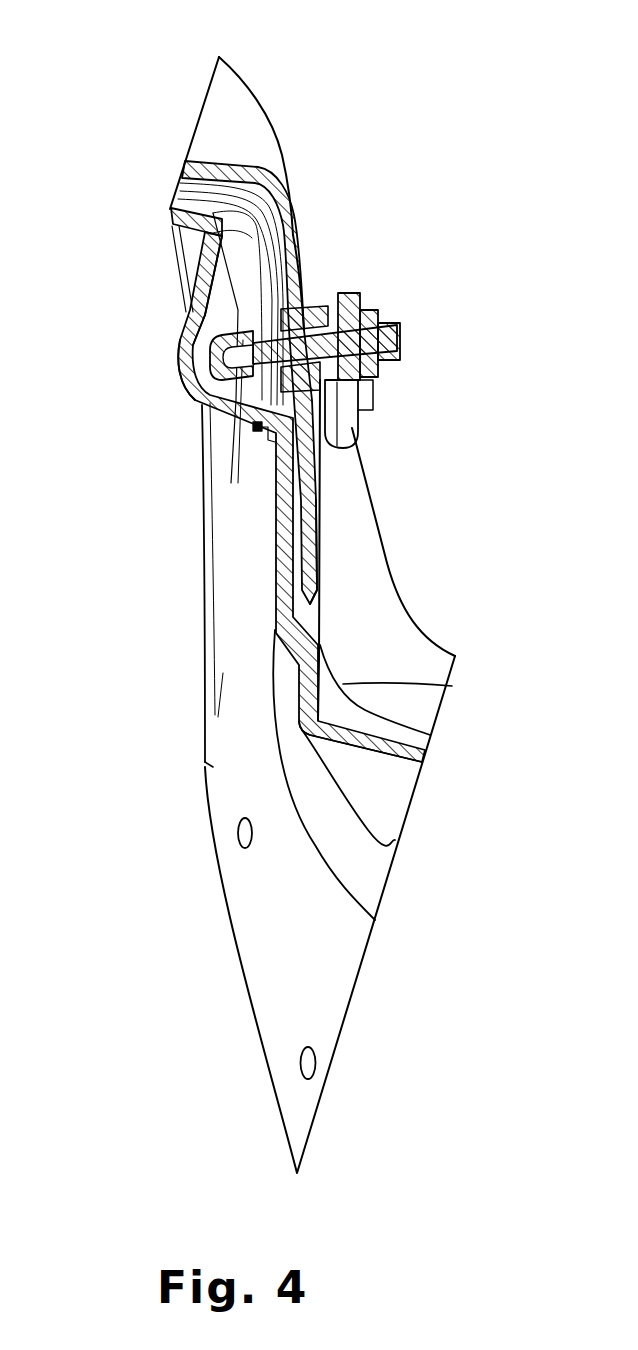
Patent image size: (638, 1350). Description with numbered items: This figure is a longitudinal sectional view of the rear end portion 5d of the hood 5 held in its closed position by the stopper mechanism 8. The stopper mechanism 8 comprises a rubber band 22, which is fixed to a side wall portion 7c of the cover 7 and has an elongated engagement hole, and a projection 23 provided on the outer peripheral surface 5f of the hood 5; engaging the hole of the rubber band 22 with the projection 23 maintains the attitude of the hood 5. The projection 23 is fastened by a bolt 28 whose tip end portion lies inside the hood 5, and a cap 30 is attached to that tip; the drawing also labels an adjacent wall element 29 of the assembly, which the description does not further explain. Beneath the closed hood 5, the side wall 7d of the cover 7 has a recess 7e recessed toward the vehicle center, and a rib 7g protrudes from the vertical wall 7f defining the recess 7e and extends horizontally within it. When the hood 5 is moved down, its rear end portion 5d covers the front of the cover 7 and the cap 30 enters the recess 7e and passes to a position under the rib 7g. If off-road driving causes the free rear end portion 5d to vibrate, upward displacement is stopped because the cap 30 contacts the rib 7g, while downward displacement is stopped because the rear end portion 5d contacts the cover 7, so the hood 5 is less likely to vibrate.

The hood 5 is at (255, 135).
The rear end portion 5d is at (238, 85).
The outer peripheral surface 5f is at (320, 530).
The cover 7 is at (420, 655).
The side wall portion 7c is at (318, 676).
The side wall 7d is at (270, 493).
The recess 7e is at (247, 300).
The vertical wall 7f is at (176, 238).
The rib 7g is at (183, 333).
The stopper mechanism 8 is at (390, 342).
The rubber band 22 is at (362, 437).
The projection 23 is at (368, 302).
The bolt 28 is at (400, 340).
The blade wall 29 is at (295, 252).
The cap 30 is at (203, 355).